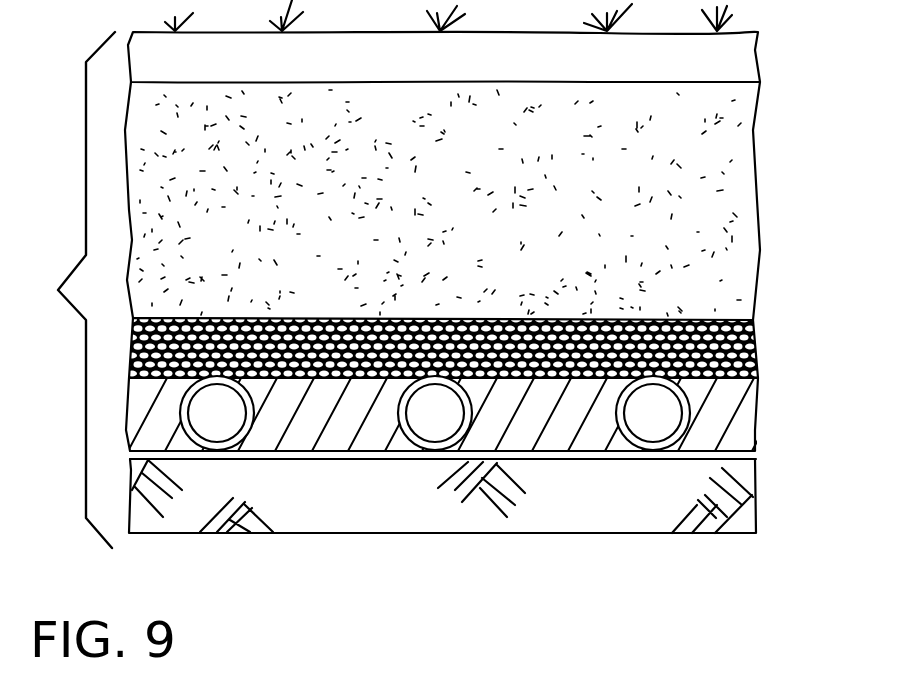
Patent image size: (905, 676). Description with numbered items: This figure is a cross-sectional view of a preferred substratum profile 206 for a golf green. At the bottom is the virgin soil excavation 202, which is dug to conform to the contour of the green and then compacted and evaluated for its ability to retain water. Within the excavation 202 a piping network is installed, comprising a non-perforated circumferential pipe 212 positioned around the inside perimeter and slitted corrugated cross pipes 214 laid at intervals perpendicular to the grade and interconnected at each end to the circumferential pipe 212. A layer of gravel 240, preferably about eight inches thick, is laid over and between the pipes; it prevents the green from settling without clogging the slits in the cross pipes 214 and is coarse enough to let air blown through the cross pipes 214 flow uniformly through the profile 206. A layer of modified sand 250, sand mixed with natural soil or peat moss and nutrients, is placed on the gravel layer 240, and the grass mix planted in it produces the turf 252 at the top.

The virgin soil excavation 202 is at (332, 532).
The substratum profile 206 is at (59, 290).
The circumferential pipe 212 is at (725, 427).
The cross pipes 214 is at (195, 430).
The layer of gravel 240 is at (760, 360).
The layer of modified sand 250 is at (758, 173).
The turf 252 is at (762, 69).